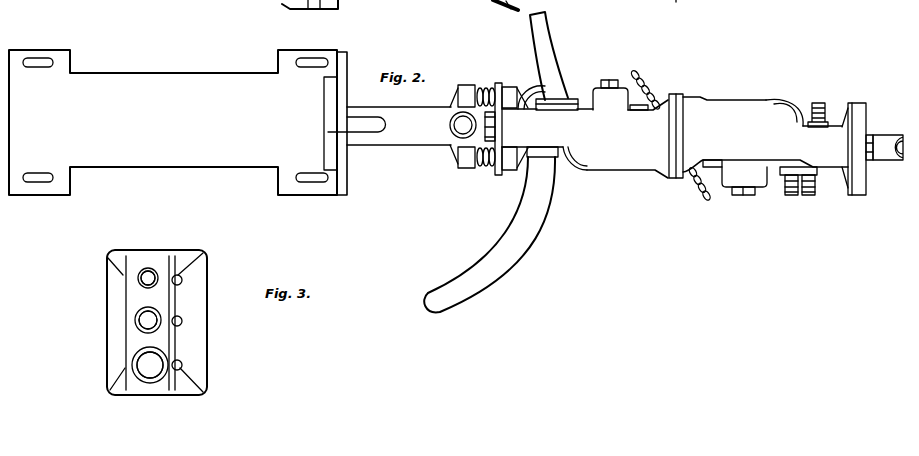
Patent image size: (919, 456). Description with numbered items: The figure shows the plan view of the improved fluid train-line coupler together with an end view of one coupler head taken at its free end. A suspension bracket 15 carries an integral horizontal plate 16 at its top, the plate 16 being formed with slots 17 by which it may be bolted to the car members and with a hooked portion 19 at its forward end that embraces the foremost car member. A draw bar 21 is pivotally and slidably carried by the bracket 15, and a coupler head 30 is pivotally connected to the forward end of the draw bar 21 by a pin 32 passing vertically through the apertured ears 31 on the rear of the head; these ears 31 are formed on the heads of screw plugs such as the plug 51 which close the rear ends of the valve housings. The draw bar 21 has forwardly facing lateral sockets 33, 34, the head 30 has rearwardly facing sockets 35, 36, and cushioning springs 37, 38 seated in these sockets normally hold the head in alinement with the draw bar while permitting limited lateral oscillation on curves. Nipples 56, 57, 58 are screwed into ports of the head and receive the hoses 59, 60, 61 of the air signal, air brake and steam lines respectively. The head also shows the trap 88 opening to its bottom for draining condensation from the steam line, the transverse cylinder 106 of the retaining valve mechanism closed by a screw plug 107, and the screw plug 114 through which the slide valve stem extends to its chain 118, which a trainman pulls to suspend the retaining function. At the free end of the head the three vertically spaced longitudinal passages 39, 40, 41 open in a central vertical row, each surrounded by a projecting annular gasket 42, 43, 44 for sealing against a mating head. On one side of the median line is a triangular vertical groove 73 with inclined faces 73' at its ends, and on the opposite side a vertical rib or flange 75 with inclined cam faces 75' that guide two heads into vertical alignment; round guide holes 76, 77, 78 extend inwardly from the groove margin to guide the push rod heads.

In FIG. 2, the suspension bracket 15 is at (685, 4).
In FIG. 2, the horizontal plate 16 is at (173, 122).
In FIG. 2, the slots 17 is at (37, 68).
In FIG. 2, the hooked portion 19 is at (330, 102).
In FIG. 2, the draw bar 21 is at (397, 137).
In FIG. 2, the coupler head 30 is at (675, 136).
In FIG. 3, the coupler head 30 is at (167, 251).
In FIG. 2, the apertured ears 31 is at (452, 128).
In FIG. 2, the pin 32 is at (461, 125).
In FIG. 2, the lateral socket 33 is at (465, 83).
In FIG. 2, the lateral socket 34 is at (458, 168).
In FIG. 2, the rearwardly facing socket 35 is at (508, 84).
In FIG. 2, the rearwardly facing socket 36 is at (512, 172).
In FIG. 2, the cushioning spring 37 is at (482, 88).
In FIG. 2, the cushioning spring 38 is at (480, 172).
In FIG. 3, the longitudinal passage 39 is at (145, 289).
In FIG. 3, the longitudinal passage 40 is at (136, 322).
In FIG. 3, the longitudinal passage 41 is at (133, 363).
In FIG. 3, the compressible gasket 42 is at (145, 270).
In FIG. 3, the compressible gasket 43 is at (147, 330).
In FIG. 3, the compressible gasket 44 is at (150, 384).
In FIG. 2, the screw plug 51 is at (496, 122).
In FIG. 2, the nipple 56 is at (562, 98).
In FIG. 2, the nipple 57 is at (531, 91).
In FIG. 2, the nipple 58 is at (543, 158).
In FIG. 2, the hose 59 is at (559, 38).
In FIG. 2, the hose 60 is at (496, 10).
In FIG. 2, the hose 61 is at (546, 208).
In FIG. 3, the vertical groove 73 is at (206, 323).
In FIG. 3, the inclined faces 73' is at (209, 323).
In FIG. 2, the vertical rib or flange 75 is at (286, 5).
In FIG. 3, the vertical rib or flange 75 is at (100, 323).
In FIG. 3, the inclined cam faces 75' is at (101, 322).
In FIG. 3, the guide hole 76 is at (182, 278).
In FIG. 3, the guide hole 77 is at (183, 322).
In FIG. 3, the guide hole 78 is at (183, 365).
In FIG. 2, the trap 88 is at (580, 172).
In FIG. 2, the transverse cylinder 106 is at (680, 137).
In FIG. 2, the screw plug 107 is at (609, 80).
In FIG. 2, the screw plug 114 is at (642, 111).
In FIG. 2, the chain 118 is at (661, 75).